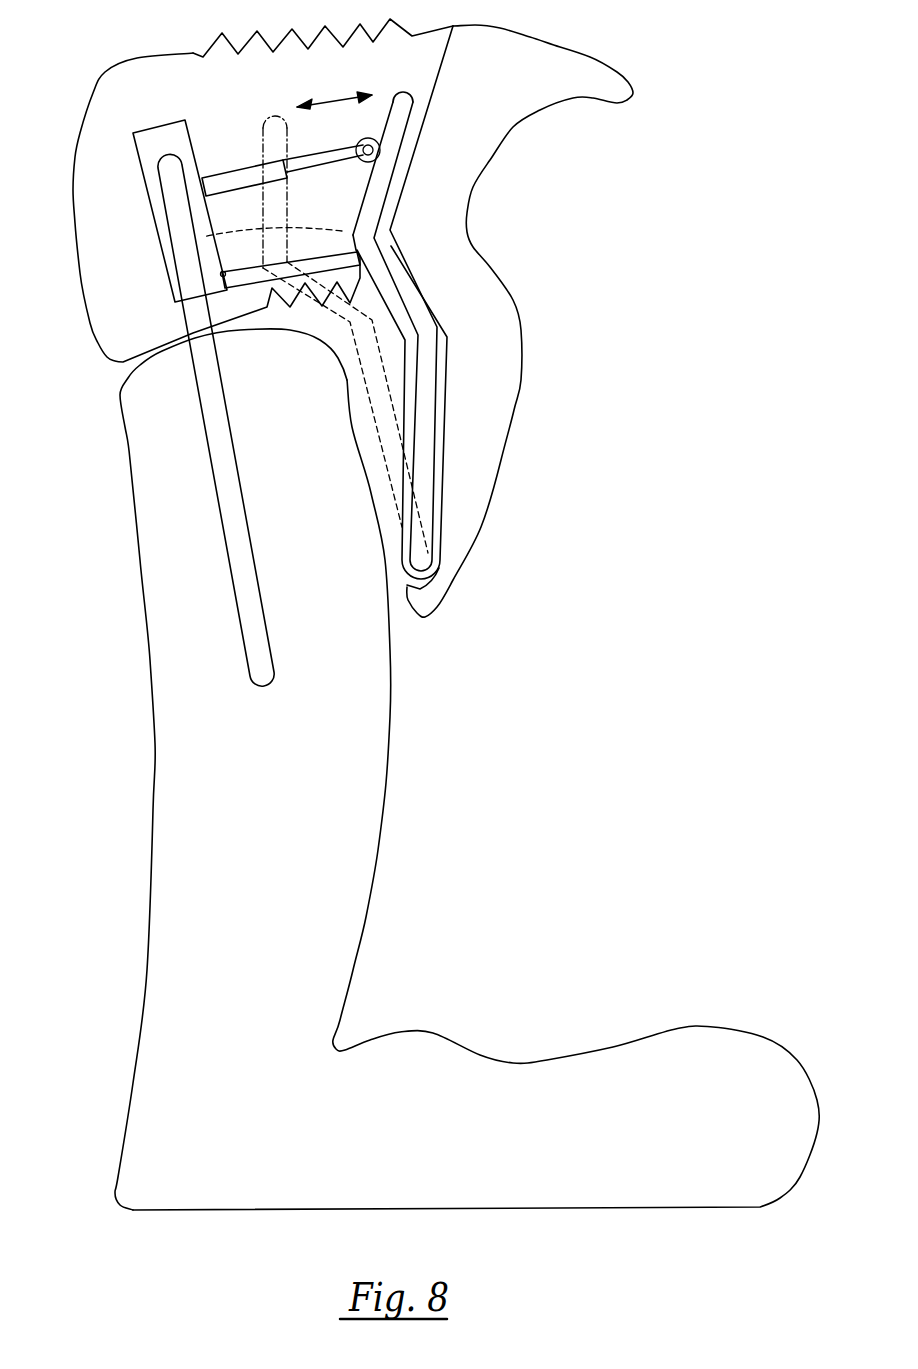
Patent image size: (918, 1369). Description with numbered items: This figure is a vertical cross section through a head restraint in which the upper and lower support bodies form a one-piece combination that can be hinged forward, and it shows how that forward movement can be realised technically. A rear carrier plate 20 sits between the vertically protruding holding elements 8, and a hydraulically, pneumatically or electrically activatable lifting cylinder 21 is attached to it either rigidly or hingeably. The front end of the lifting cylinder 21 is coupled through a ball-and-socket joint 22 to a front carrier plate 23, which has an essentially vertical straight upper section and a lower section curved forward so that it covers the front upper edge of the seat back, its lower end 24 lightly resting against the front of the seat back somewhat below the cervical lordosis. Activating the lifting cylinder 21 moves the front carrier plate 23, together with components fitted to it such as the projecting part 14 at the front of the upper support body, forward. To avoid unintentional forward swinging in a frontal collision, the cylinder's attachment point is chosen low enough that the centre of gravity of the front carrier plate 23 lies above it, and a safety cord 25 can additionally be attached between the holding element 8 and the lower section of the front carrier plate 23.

The holding element 8 is at (233, 457).
The projecting part 14 is at (615, 72).
The rear carrier plate 20 is at (342, 231).
The lifting cylinder 21 is at (227, 173).
The ball-and-socket joint 22 is at (358, 118).
The front carrier plate 23 is at (368, 210).
The lower end 24 is at (417, 557).
The safety cord 25 is at (222, 360).